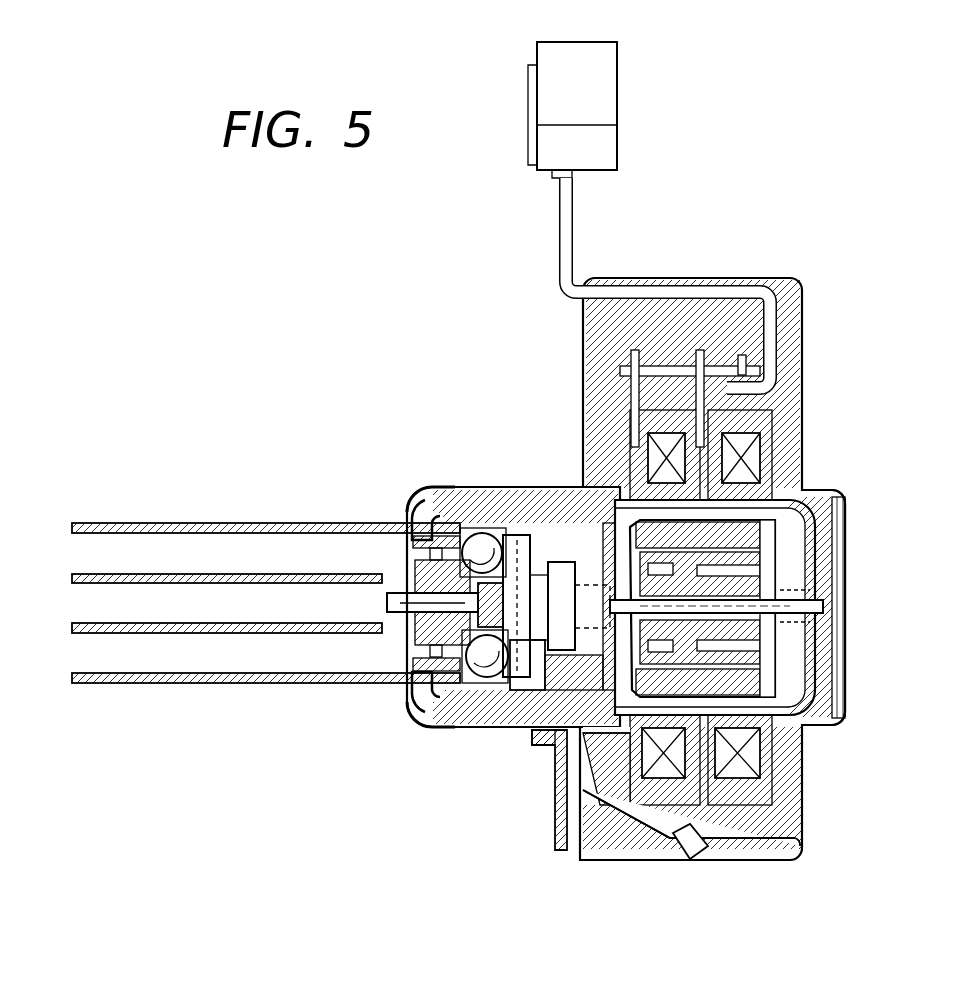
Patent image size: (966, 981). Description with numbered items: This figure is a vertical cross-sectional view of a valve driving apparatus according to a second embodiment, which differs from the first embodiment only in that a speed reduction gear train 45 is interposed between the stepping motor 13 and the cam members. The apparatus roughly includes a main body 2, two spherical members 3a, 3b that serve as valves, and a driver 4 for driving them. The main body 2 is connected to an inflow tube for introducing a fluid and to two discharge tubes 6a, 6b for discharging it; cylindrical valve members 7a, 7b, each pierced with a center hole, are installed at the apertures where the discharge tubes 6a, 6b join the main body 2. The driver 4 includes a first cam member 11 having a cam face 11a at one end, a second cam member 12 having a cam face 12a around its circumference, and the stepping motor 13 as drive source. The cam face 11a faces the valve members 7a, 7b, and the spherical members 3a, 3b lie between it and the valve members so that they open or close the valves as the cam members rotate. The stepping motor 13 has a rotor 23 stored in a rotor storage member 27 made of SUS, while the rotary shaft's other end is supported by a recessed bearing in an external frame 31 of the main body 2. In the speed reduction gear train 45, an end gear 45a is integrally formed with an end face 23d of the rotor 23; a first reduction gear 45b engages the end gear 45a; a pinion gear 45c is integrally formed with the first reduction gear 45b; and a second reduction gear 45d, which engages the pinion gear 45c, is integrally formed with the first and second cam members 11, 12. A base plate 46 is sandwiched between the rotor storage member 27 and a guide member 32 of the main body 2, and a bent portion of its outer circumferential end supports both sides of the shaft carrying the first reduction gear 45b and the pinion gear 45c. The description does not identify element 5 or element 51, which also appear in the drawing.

The main body 2 is at (362, 370).
The spherical member 3a is at (449, 525).
The spherical member 3b is at (480, 697).
The driver 4 is at (855, 378).
The valve shaft 5 is at (258, 597).
The discharge tube 6a is at (125, 523).
The discharge tube 6b is at (145, 685).
The cylindrical valve member 7a is at (398, 540).
The cylindrical valve member 7b is at (400, 670).
The first cam member 11 is at (500, 700).
The cam face 11a is at (430, 560).
The second cam member 12 is at (432, 697).
The cam face 12a is at (458, 700).
The stepping motor 13 is at (833, 477).
The rotor 23 is at (772, 548).
The end face 23d is at (590, 520).
The rotor storage member 27 is at (812, 686).
The external frame 31 is at (418, 524).
The guide member 32 is at (410, 700).
The speed reduction gear train 45 is at (548, 545).
The end gear 45a is at (473, 520).
The first reduction gear 45b is at (557, 785).
The pinion gear 45c is at (535, 758).
The second reduction gear 45d is at (528, 527).
The base plate 46 is at (565, 520).
The connector 51 is at (722, 200).